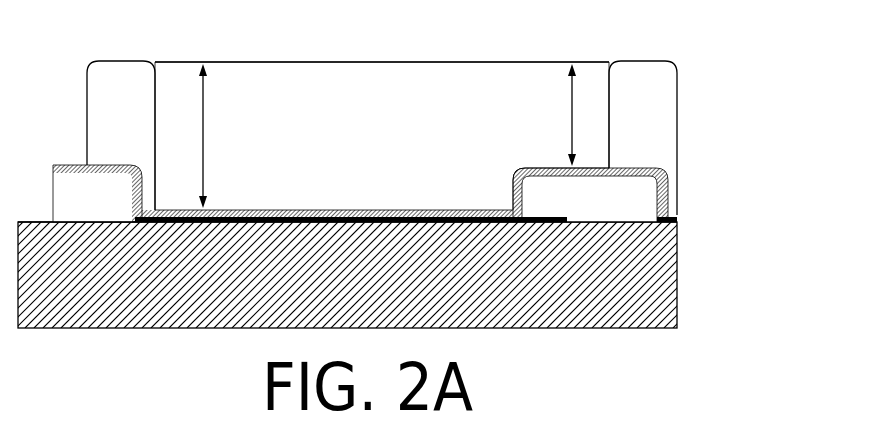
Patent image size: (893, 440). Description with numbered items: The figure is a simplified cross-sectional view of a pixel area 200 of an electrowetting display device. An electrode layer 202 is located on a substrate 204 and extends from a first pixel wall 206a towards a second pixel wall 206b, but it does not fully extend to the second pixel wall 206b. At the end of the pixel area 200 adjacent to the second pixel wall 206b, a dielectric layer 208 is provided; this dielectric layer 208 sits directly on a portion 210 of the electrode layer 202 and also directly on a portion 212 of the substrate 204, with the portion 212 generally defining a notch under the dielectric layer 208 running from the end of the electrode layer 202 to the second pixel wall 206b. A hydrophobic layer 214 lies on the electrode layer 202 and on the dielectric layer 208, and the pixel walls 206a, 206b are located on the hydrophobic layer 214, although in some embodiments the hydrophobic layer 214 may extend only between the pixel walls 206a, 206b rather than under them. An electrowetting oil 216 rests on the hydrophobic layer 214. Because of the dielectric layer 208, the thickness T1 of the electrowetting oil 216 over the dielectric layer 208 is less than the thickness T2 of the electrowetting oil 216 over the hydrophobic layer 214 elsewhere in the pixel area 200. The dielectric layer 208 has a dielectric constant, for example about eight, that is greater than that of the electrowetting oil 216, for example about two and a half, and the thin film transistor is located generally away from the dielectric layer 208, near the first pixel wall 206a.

The pixel area 200 is at (700, 55).
The electrode layer 202 is at (187, 222).
The substrate 204 is at (330, 286).
The first pixel wall 206a is at (97, 131).
The second pixel wall 206b is at (618, 131).
The dielectric layer 208 is at (571, 213).
The portion of the electrode layer 210 is at (535, 223).
The portion of the substrate 212 is at (605, 223).
The hydrophobic layer 214 is at (255, 210).
The electrowetting oil 216 is at (367, 155).
The thickness of electrowetting oil on the dielectric layer T1 is at (572, 115).
The thickness of electrowetting oil on the hydrophobic layer T2 is at (204, 136).